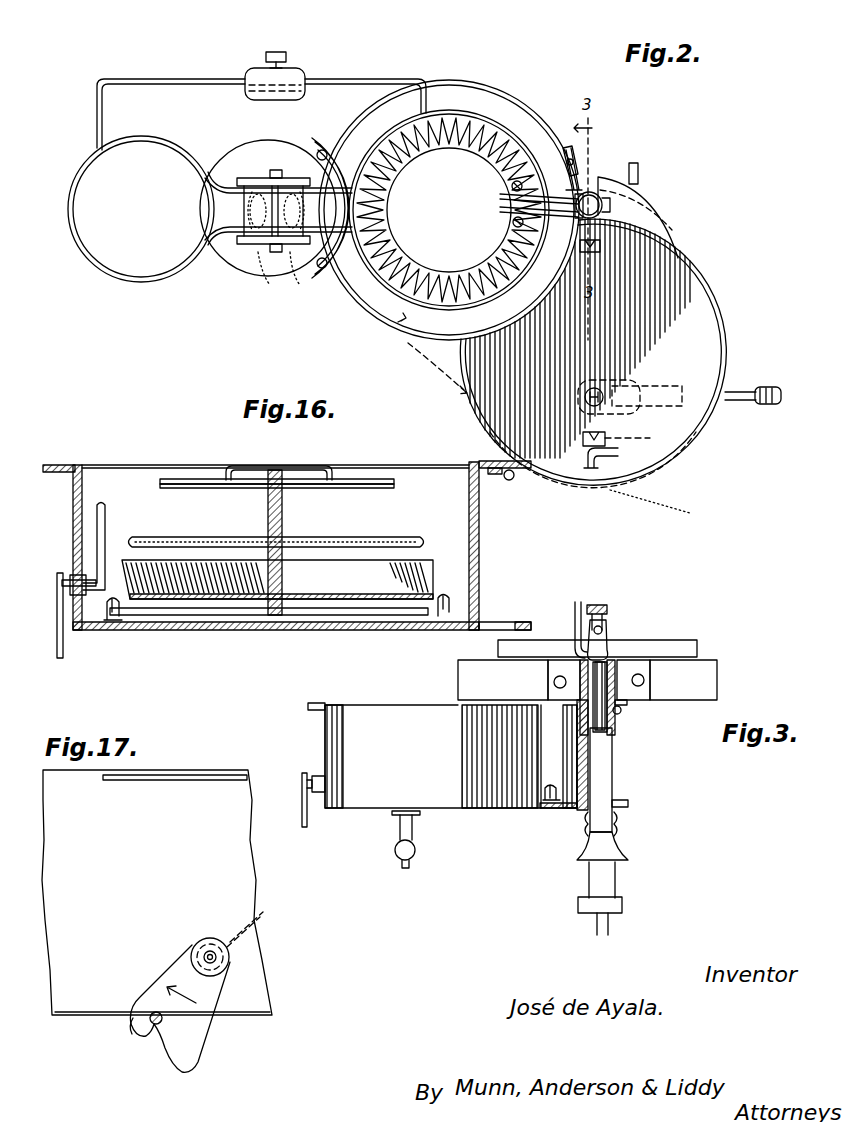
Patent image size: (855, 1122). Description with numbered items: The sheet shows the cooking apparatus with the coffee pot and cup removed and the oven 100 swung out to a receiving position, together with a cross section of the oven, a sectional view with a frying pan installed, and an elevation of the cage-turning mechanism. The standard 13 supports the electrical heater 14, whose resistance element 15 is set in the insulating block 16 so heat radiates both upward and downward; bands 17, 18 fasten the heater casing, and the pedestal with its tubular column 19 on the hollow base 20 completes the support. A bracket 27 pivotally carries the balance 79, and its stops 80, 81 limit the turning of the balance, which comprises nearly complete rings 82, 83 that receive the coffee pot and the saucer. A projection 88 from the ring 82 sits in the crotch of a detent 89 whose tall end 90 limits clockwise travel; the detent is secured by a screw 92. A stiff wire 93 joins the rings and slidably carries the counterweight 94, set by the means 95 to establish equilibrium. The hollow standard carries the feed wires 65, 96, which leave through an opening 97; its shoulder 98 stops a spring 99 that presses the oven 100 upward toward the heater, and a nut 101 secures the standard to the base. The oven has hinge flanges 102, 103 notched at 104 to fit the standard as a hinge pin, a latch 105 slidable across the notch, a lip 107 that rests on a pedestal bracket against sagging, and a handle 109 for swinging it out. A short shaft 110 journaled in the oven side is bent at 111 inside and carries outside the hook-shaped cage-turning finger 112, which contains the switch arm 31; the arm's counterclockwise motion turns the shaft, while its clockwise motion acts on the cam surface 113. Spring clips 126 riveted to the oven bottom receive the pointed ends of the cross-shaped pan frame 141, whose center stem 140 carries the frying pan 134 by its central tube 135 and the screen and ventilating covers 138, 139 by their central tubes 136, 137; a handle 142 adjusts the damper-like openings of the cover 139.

In FIG. 3, the standard 13 is at (602, 780).
In FIG. 2, the electrical heater 14 is at (408, 328).
In FIG. 3, the electrical heater 14 is at (701, 663).
In FIG. 2, the resistance element 15 is at (417, 296).
In FIG. 2, the insulating block 16 is at (408, 304).
In FIG. 2, the band 17 is at (295, 252).
In FIG. 2, the band 18 is at (571, 150).
In FIG. 3, the band 18 is at (638, 660).
In FIG. 2, the tubular column 19 is at (275, 246).
In FIG. 2, the hollow base 20 is at (262, 158).
In FIG. 2, the bracket 27 is at (262, 240).
In FIG. 17, the switch arm 31 is at (152, 1024).
In FIG. 3, the feed wire 65 is at (612, 735).
In FIG. 2, the balance 79 is at (320, 160).
In FIG. 2, the stop 80 is at (320, 268).
In FIG. 2, the stop 81 is at (240, 240).
In FIG. 2, the ring 82 is at (345, 175).
In FIG. 3, the ring 82 is at (619, 680).
In FIG. 2, the ring 83 is at (75, 170).
In FIG. 2, the projection 88 is at (520, 202).
In FIG. 3, the projection 88 is at (606, 650).
In FIG. 2, the detent 89 is at (512, 182).
In FIG. 2, the tall end 90 is at (513, 222).
In FIG. 3, the tall end 90 is at (582, 605).
In FIG. 2, the screw 92 is at (602, 205).
In FIG. 3, the screw 92 is at (606, 609).
In FIG. 2, the stiff wire 93 is at (320, 84).
In FIG. 2, the counterweight 94 is at (295, 75).
In FIG. 2, the adjusting means 95 is at (278, 54).
In FIG. 3, the feed wire 96 is at (612, 722).
In FIG. 3, the opening 97 is at (610, 680).
In FIG. 3, the shoulder 98 is at (620, 855).
In FIG. 3, the spring 99 is at (618, 820).
In FIG. 2, the oven 100 is at (706, 277).
In FIG. 16, the oven 100 is at (75, 512).
In FIG. 3, the oven 100 is at (322, 769).
In FIG. 17, the oven 100 is at (245, 872).
In FIG. 3, the nut 101 is at (622, 899).
In FIG. 2, the hinge flange 102 is at (652, 216).
In FIG. 16, the hinge flange 102 is at (487, 469).
In FIG. 16, the hinge flange 103 is at (505, 628).
In FIG. 3, the hinge flange 103 is at (628, 804).
In FIG. 2, the notch 104 is at (580, 168).
In FIG. 16, the notch 104 is at (495, 474).
In FIG. 3, the notch 104 is at (632, 706).
In FIG. 2, the latch 105 is at (640, 170).
In FIG. 16, the latch 105 is at (511, 479).
In FIG. 3, the latch 105 is at (620, 712).
In FIG. 2, the lip 107 is at (630, 476).
In FIG. 16, the lip 107 is at (52, 472).
In FIG. 3, the lip 107 is at (308, 704).
In FIG. 2, the handle 109 is at (735, 392).
In FIG. 3, the handle 109 is at (394, 847).
In FIG. 16, the short shaft 110 is at (72, 582).
In FIG. 3, the short shaft 110 is at (310, 784).
In FIG. 17, the short shaft 110 is at (220, 955).
In FIG. 2, the bent inner end 111 is at (618, 456).
In FIG. 16, the bent inner end 111 is at (97, 528).
In FIG. 17, the bent inner end 111 is at (262, 914).
In FIG. 2, the cage-turning finger 112 is at (665, 504).
In FIG. 16, the cage-turning finger 112 is at (57, 612).
In FIG. 3, the cage-turning finger 112 is at (302, 806).
In FIG. 17, the cage-turning finger 112 is at (135, 1026).
In FIG. 17, the cam surface 113 is at (180, 1068).
In FIG. 2, the spring clip 126 is at (600, 246).
In FIG. 16, the spring clip 126 is at (108, 606).
In FIG. 3, the spring clip 126 is at (547, 803).
In FIG. 16, the frying pan 134 is at (305, 598).
In FIG. 16, the central tube 135 is at (290, 570).
In FIG. 16, the central tube 136 is at (285, 538).
In FIG. 16, the central tube 137 is at (235, 485).
In FIG. 16, the screen cover 138 is at (300, 542).
In FIG. 16, the ventilating cover 139 is at (168, 489).
In FIG. 16, the center stem 140 is at (266, 520).
In FIG. 16, the pan frame 141 is at (345, 616).
In FIG. 16, the handle 142 is at (233, 469).